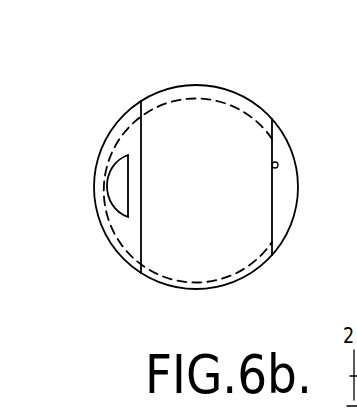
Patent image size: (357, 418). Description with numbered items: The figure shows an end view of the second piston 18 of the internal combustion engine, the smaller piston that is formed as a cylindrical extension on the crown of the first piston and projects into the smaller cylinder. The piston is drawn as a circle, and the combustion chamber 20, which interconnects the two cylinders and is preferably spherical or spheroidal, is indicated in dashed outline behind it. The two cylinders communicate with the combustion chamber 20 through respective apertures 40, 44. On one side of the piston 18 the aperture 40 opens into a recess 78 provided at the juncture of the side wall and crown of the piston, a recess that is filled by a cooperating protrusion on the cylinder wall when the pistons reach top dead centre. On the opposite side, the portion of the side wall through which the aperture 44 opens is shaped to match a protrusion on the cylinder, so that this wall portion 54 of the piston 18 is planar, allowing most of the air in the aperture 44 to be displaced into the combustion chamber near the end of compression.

The second piston 18 is at (210, 126).
The combustion chamber 20 is at (182, 146).
The recess 78 is at (115, 137).
The aperture 40 is at (120, 181).
The aperture 44 is at (273, 193).
The wall portion 54 is at (272, 162).